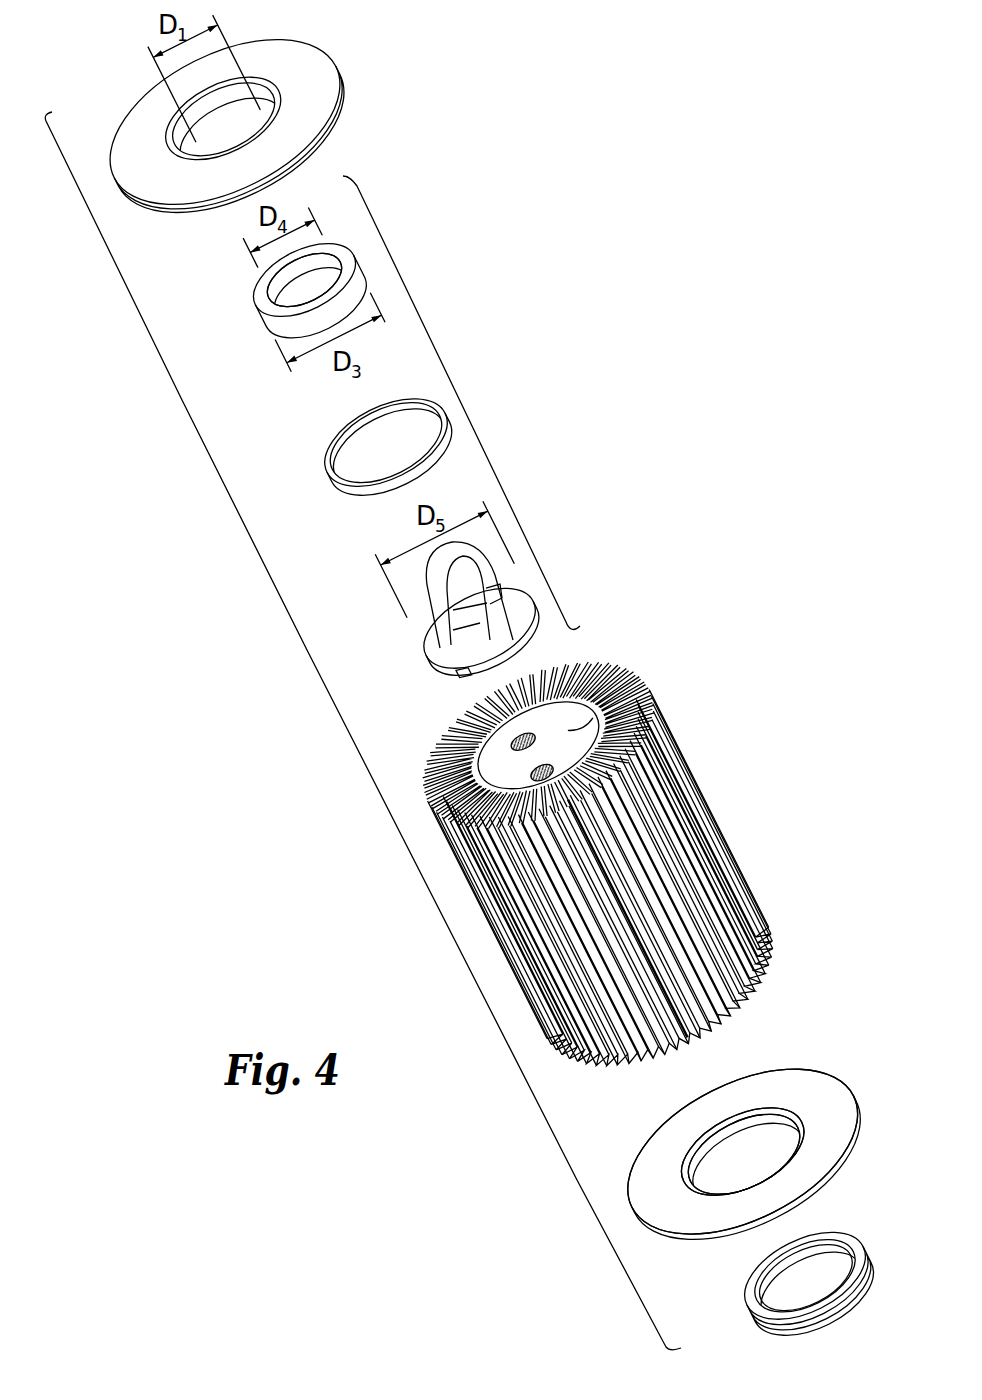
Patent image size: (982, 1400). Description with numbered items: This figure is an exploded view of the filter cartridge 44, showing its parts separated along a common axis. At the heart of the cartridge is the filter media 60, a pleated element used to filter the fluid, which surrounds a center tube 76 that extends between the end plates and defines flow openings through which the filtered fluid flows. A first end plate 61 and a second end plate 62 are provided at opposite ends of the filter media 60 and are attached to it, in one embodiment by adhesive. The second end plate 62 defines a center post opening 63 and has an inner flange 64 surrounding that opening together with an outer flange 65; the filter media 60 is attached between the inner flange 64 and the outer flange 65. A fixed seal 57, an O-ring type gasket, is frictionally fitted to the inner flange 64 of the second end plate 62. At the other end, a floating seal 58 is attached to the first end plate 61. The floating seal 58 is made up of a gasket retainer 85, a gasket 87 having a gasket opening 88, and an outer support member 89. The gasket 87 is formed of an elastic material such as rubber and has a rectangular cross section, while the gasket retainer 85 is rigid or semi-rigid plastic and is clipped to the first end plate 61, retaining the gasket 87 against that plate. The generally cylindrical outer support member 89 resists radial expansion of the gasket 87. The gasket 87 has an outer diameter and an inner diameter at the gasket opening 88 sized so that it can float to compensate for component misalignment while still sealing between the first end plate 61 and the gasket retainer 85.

The filter cartridge 44 is at (354, 742).
The fixed seal 57 is at (747, 1298).
The floating seal 58 is at (466, 416).
The filter media 60 is at (692, 782).
The first end plate 61 is at (342, 92).
The second end plate 62 is at (858, 1143).
The center post opening 63 is at (728, 1144).
The inner flange 64 is at (783, 1107).
The outer flange 65 is at (847, 1093).
The center tube 76 is at (597, 693).
The gasket retainer 85 is at (433, 642).
The gasket 87 is at (260, 313).
The gasket opening 88 is at (313, 272).
The outer support member 89 is at (327, 473).